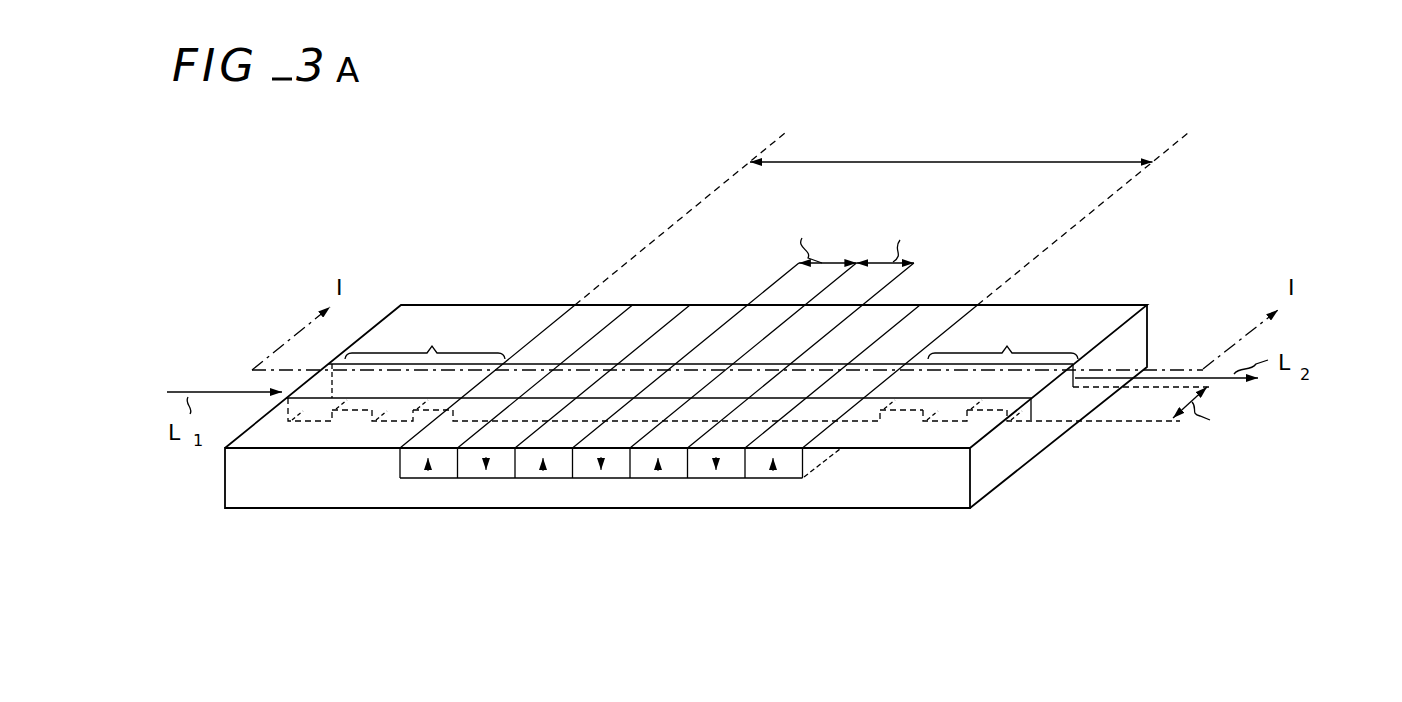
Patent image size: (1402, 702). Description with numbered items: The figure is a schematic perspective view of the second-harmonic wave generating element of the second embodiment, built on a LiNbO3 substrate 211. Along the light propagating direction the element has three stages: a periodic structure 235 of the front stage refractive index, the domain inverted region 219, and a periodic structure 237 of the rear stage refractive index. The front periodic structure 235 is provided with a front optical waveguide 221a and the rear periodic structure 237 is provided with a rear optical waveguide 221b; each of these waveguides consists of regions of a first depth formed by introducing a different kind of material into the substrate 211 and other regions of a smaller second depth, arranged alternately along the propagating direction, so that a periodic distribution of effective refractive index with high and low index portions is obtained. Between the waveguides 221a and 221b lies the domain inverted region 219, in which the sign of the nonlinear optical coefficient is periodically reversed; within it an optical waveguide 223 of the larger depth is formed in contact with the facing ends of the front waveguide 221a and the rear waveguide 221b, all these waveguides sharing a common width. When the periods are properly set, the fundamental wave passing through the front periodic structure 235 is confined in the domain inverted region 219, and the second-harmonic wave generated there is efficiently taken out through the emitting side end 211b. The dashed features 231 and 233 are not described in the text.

The LiNbO3 substrate 211 is at (655, 494).
The emitting side end 211b is at (1056, 393).
The domain inverted region 219 is at (944, 160).
The front optical waveguide 221a is at (442, 311).
The rear optical waveguide 221b is at (1119, 293).
The optical waveguide 223 is at (897, 357).
The electrode finger 231 is at (298, 421).
The electrode finger 233 is at (352, 405).
The periodic structure of the front stage refractive index 235 is at (432, 346).
The periodic structure of the rear stage refractive index 237 is at (1007, 346).